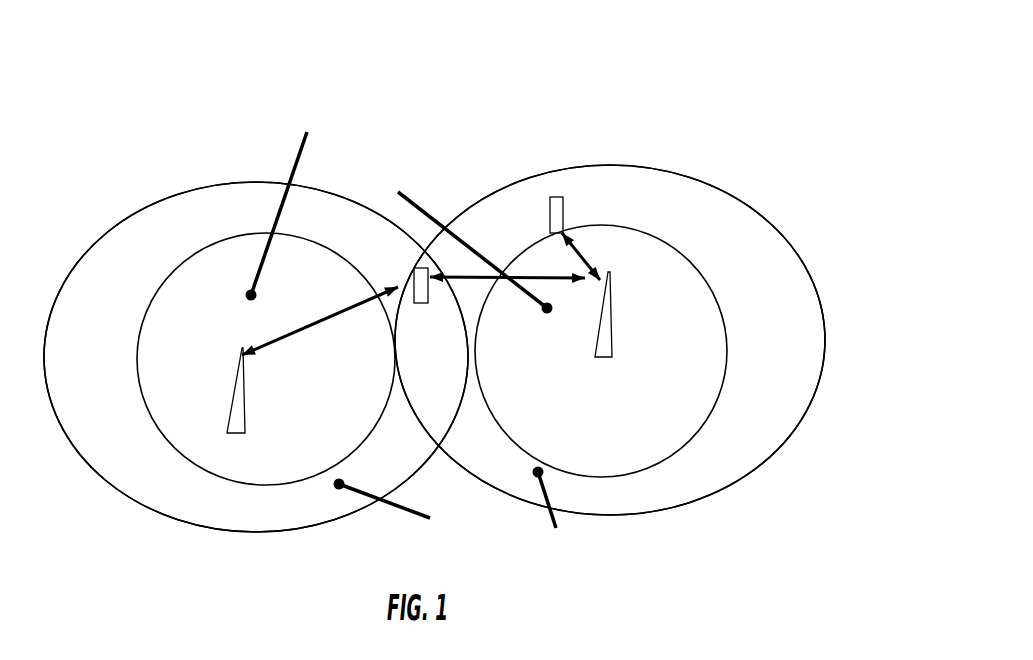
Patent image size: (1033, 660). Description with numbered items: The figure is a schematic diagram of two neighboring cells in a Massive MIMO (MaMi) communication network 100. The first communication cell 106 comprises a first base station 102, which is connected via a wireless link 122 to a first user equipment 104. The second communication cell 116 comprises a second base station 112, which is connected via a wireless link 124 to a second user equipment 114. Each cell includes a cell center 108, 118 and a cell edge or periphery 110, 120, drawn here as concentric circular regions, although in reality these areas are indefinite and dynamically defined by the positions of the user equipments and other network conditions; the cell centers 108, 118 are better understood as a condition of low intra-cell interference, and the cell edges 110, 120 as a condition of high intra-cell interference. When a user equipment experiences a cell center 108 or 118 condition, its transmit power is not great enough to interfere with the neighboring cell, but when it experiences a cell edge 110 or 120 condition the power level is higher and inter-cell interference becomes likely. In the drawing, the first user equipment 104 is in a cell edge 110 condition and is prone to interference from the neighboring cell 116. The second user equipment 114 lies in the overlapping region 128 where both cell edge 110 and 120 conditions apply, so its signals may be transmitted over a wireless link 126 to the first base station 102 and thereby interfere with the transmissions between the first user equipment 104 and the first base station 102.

The MaMi communication network 100 is at (612, 85).
The first Base Station (BS1) 102 is at (607, 328).
The first User Equipment (UE1) 104 is at (551, 205).
The first communication cell 106 is at (728, 178).
The cell center of the first communication cell 108 is at (423, 210).
The cell edge of the first communication cell 110 is at (552, 519).
The second Base Station (BS2) 112 is at (237, 405).
The second User Equipment (UE2) 114 is at (414, 280).
The second communication cell 116 is at (130, 193).
The cell center of the second communication cell 118 is at (296, 163).
The cell edge of the second communication cell 120 is at (402, 508).
The wireless link 122 is at (586, 260).
The wireless link 124 is at (307, 328).
The wireless link 126 is at (481, 279).
The overlapping region 128 is at (452, 381).